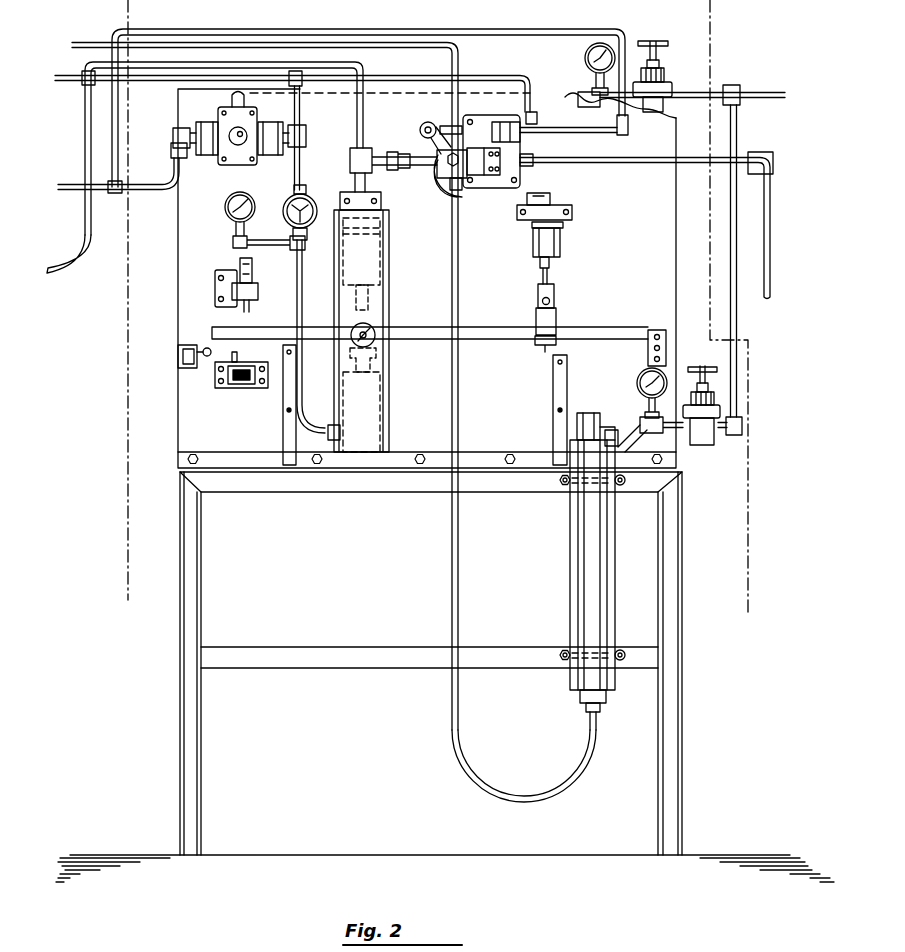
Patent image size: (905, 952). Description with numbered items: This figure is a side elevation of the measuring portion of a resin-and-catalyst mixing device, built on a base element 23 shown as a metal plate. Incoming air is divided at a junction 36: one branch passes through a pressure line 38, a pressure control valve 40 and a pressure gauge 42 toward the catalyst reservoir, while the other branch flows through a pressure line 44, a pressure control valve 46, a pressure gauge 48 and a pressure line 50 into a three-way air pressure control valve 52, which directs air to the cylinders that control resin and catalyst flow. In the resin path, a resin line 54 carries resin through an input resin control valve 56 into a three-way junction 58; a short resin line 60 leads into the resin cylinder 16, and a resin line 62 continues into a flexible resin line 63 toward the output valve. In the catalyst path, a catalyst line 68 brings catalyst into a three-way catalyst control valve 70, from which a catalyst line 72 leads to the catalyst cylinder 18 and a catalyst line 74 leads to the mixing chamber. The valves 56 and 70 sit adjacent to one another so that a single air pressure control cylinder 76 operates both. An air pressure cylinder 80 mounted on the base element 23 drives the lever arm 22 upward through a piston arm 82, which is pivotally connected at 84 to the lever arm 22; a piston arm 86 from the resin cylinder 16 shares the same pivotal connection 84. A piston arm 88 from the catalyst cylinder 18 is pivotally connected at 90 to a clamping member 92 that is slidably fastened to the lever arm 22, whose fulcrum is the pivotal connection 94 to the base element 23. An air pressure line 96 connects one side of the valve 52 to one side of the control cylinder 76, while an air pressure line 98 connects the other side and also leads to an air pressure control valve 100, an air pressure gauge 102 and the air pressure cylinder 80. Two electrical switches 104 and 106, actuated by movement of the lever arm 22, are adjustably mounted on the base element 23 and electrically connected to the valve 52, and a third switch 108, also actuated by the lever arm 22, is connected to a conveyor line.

The resin cylinder 16 is at (384, 256).
The catalyst cylinder 18 is at (533, 243).
The lever arm 22 is at (568, 554).
The base element 23 is at (178, 407).
The junction 36 is at (738, 86).
The pressure line 38 is at (740, 318).
The pressure control valve 40 is at (700, 445).
The pressure gauge 42 is at (636, 383).
The pressure line 44 is at (708, 99).
The pressure control valve 46 is at (666, 80).
The pressure gauge 48 is at (584, 52).
The pressure line 50 is at (578, 92).
The three-way air pressure control valve 52 is at (226, 117).
The resin line 54 is at (772, 214).
The input resin control valve 56 is at (535, 181).
The three-way junction 58 is at (350, 153).
The short resin line 60 is at (354, 178).
The resin line 62 is at (366, 113).
The flexible resin line 63 is at (78, 258).
The catalyst line 68 is at (522, 801).
The three-way catalyst control valve 70 is at (447, 183).
The catalyst line 72 is at (430, 190).
The catalyst line 74 is at (446, 60).
The air pressure control cylinder 76 is at (615, 137).
The air pressure cylinder 80 is at (382, 407).
The piston arm 82 is at (378, 359).
The pivotal connection 84 is at (352, 340).
The piston arm 86 is at (372, 298).
The piston arm 88 is at (540, 270).
The pivotal connection 90 is at (540, 300).
The clamping member 92 is at (536, 316).
The pivotal connection 94 is at (655, 330).
The air pressure line 96 is at (356, 113).
The air pressure line 98 is at (549, 31).
The air pressure control valve 100 is at (290, 193).
The air pressure gauge 102 is at (230, 194).
The electrical switch 104 is at (254, 298).
The electrical switch 106 is at (244, 390).
The third switch 108 is at (178, 356).